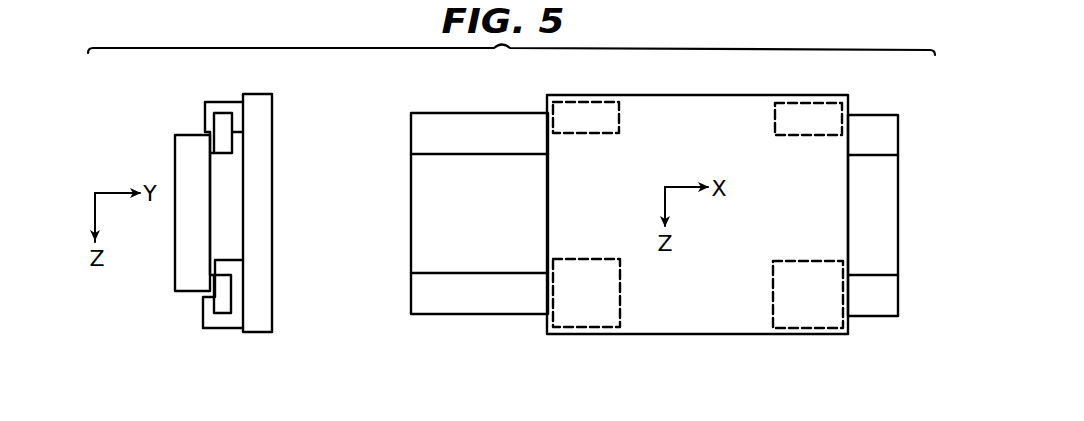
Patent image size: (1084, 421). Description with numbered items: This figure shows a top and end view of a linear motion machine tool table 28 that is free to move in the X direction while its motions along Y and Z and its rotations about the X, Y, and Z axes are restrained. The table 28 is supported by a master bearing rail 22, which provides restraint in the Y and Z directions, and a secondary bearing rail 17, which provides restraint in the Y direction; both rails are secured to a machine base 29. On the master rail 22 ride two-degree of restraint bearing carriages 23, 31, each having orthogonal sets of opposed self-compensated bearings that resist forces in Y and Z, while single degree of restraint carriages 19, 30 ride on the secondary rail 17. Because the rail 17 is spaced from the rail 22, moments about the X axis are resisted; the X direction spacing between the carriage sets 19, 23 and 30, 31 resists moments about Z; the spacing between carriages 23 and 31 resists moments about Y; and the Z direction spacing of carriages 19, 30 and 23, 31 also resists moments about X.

The secondary bearing rail 17 is at (225, 140).
The bearing carriage 19 is at (227, 100).
The master bearing rail 22 is at (422, 289).
The bearing carriage 23 is at (222, 329).
The machine tool table 28 is at (273, 172).
The machine base 29 is at (198, 220).
The bearing carriage 30 is at (806, 91).
The bearing carriage 31 is at (808, 341).